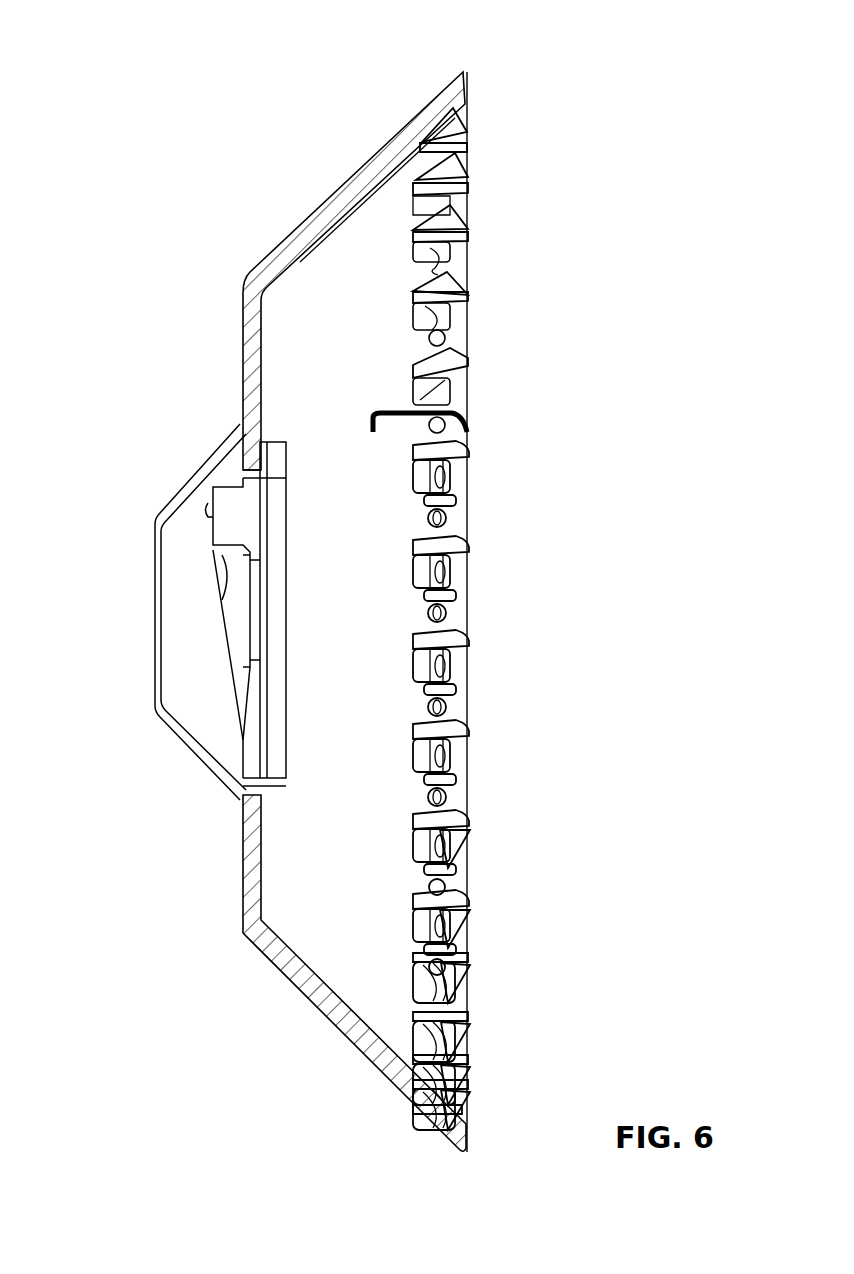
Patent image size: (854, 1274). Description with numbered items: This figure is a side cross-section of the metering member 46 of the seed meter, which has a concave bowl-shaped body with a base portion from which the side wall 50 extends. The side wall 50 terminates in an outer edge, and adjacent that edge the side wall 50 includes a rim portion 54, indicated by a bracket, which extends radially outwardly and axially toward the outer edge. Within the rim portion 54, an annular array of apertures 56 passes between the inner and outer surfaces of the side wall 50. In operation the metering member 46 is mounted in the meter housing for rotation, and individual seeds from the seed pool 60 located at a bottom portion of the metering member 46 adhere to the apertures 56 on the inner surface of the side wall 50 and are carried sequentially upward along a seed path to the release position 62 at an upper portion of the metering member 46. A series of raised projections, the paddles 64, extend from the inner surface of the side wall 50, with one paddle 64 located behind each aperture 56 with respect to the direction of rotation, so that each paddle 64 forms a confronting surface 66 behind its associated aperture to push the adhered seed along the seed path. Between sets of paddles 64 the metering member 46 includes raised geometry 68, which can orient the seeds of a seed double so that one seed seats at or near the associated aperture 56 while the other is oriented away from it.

The metering member 46 is at (111, 209).
The side wall 50 is at (270, 263).
The rim portion 54 is at (440, 395).
The apertures 56 is at (450, 708).
The seed pool 60 is at (542, 571).
The release position 62 is at (432, 80).
The paddles 64 is at (463, 307).
The confronting surface 66 is at (448, 283).
The raised geometry 68 is at (440, 840).